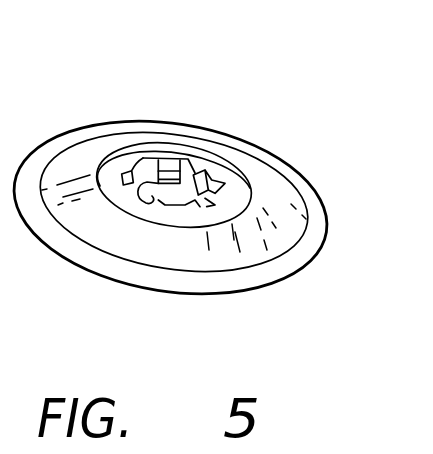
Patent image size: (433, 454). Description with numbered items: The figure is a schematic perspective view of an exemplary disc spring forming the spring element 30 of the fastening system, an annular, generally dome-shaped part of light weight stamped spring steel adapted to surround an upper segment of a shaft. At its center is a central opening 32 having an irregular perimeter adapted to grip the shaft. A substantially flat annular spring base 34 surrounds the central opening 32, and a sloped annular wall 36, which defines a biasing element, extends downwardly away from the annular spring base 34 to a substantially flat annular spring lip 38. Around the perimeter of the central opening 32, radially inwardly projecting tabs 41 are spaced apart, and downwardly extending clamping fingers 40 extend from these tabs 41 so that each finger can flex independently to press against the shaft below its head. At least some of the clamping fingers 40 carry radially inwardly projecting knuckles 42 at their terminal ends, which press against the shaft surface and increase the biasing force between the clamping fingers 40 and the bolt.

The spring element 30 is at (249, 86).
The central opening 32 is at (200, 163).
The annular spring base 34 is at (120, 155).
The sloped annular wall 36 is at (265, 178).
The annular spring lip 38 is at (308, 200).
The clamping fingers 40 is at (173, 172).
The tabs 41 is at (200, 172).
The knuckles 42 is at (182, 200).